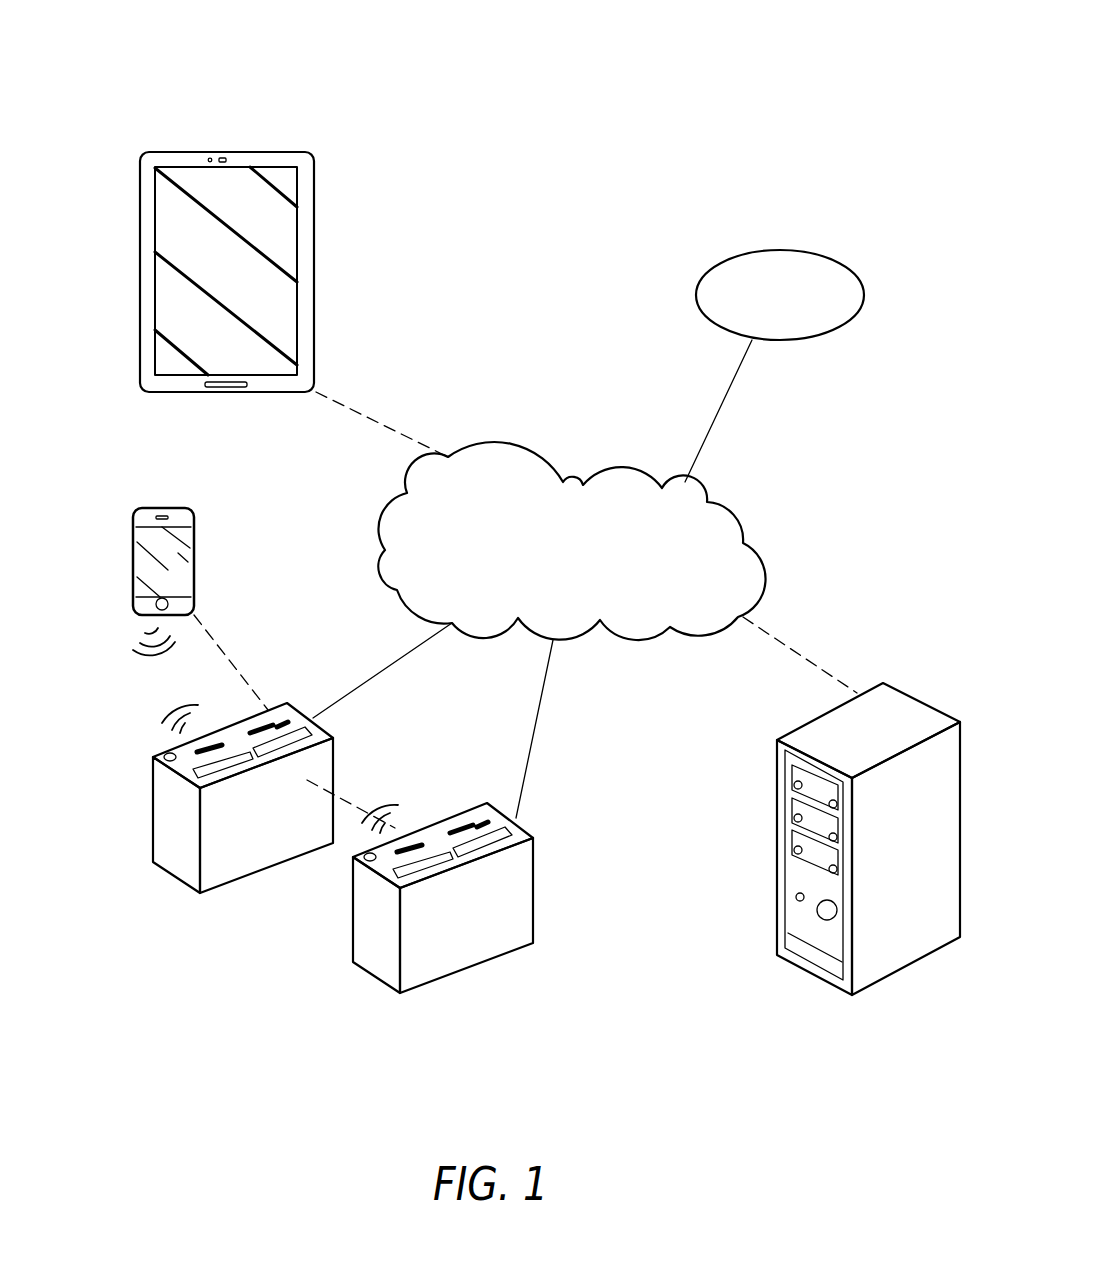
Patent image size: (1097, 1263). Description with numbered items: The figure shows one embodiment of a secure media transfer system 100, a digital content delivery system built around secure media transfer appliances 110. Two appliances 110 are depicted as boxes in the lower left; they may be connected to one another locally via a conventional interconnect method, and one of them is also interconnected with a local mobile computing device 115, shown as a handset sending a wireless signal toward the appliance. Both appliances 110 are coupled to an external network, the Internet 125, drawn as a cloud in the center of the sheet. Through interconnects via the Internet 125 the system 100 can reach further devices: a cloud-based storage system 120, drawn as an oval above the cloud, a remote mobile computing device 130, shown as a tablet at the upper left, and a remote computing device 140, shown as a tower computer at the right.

The secure media transfer system 100 is at (687, 167).
The secure media transfer appliance 110 is at (177, 825).
The local mobile computing device 115 is at (132, 543).
The cloud-based storage system 120 is at (866, 294).
The Internet 125 is at (545, 457).
The remote mobile computing device 130 is at (174, 152).
The remote computing device 140 is at (912, 927).